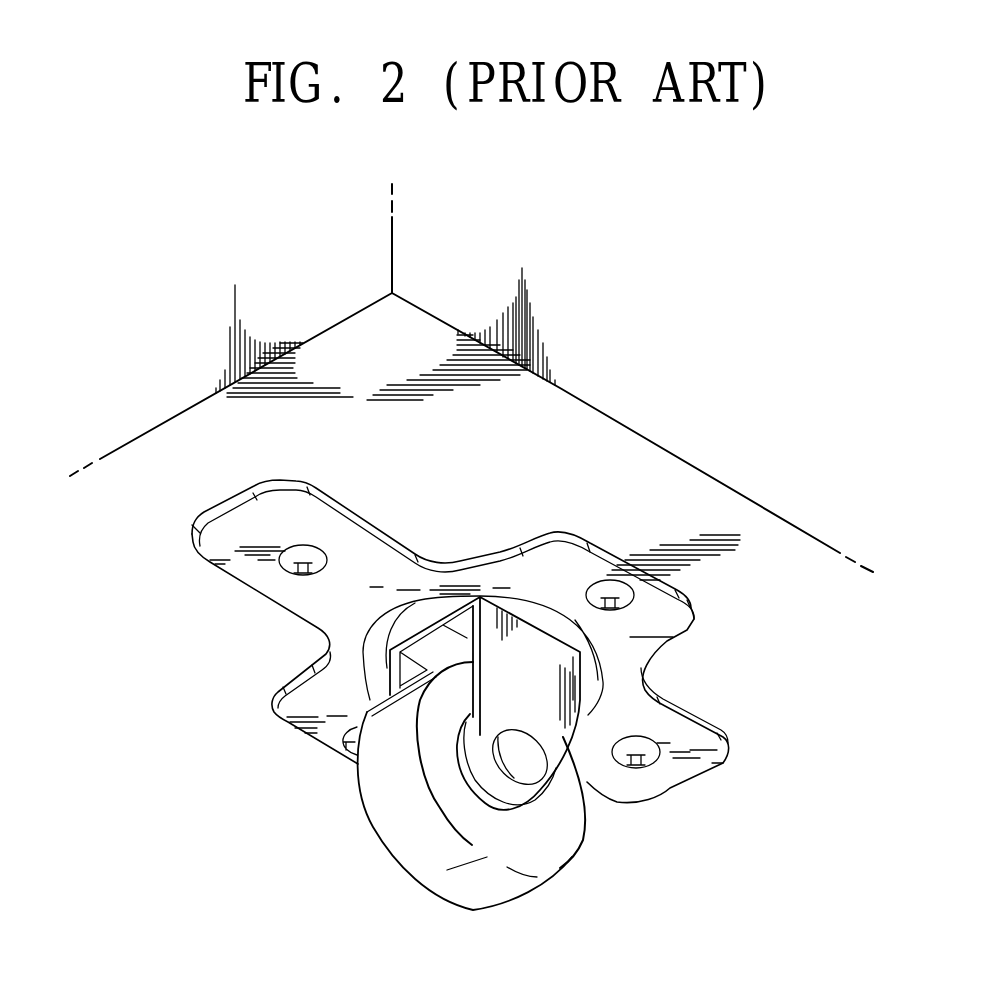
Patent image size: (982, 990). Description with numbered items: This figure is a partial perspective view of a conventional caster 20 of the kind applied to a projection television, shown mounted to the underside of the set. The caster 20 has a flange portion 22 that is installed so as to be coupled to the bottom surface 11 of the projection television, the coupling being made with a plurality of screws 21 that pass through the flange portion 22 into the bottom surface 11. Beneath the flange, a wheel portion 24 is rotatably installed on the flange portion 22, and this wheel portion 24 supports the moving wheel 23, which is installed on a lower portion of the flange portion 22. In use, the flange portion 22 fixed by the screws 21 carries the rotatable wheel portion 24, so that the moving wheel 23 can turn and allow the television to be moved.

The bottom surface 11 is at (508, 403).
The caster 20 is at (228, 649).
The screws 21 is at (670, 638).
The flange portion 22 is at (703, 753).
The moving wheel 23 is at (553, 853).
The wheel portion 24 is at (572, 752).